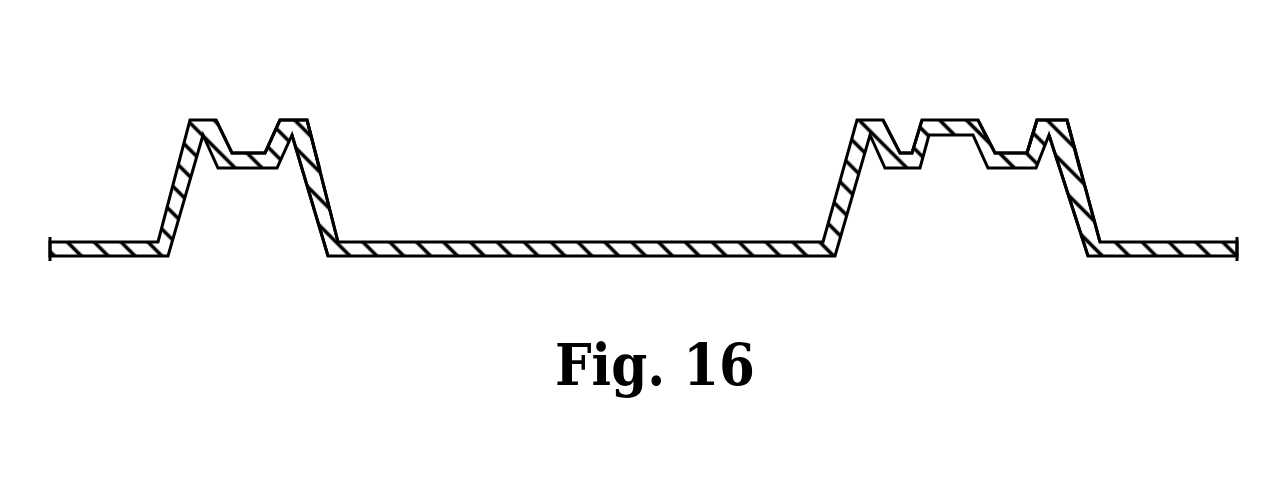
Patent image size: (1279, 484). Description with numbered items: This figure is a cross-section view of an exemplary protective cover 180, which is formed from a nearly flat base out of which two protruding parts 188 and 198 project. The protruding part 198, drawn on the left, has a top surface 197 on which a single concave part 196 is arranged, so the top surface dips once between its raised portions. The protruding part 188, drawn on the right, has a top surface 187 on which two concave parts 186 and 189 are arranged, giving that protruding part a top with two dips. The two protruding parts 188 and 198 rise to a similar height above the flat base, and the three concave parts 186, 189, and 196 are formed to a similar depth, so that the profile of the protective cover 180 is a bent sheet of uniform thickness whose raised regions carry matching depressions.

The protective cover 180 is at (1215, 238).
The concave part 186 is at (903, 155).
The top surface 187 is at (1055, 120).
The protruding part 188 is at (1090, 193).
The concave part 189 is at (1012, 155).
The concave part 196 is at (250, 153).
The top surface 197 is at (293, 120).
The protruding part 198 is at (329, 193).